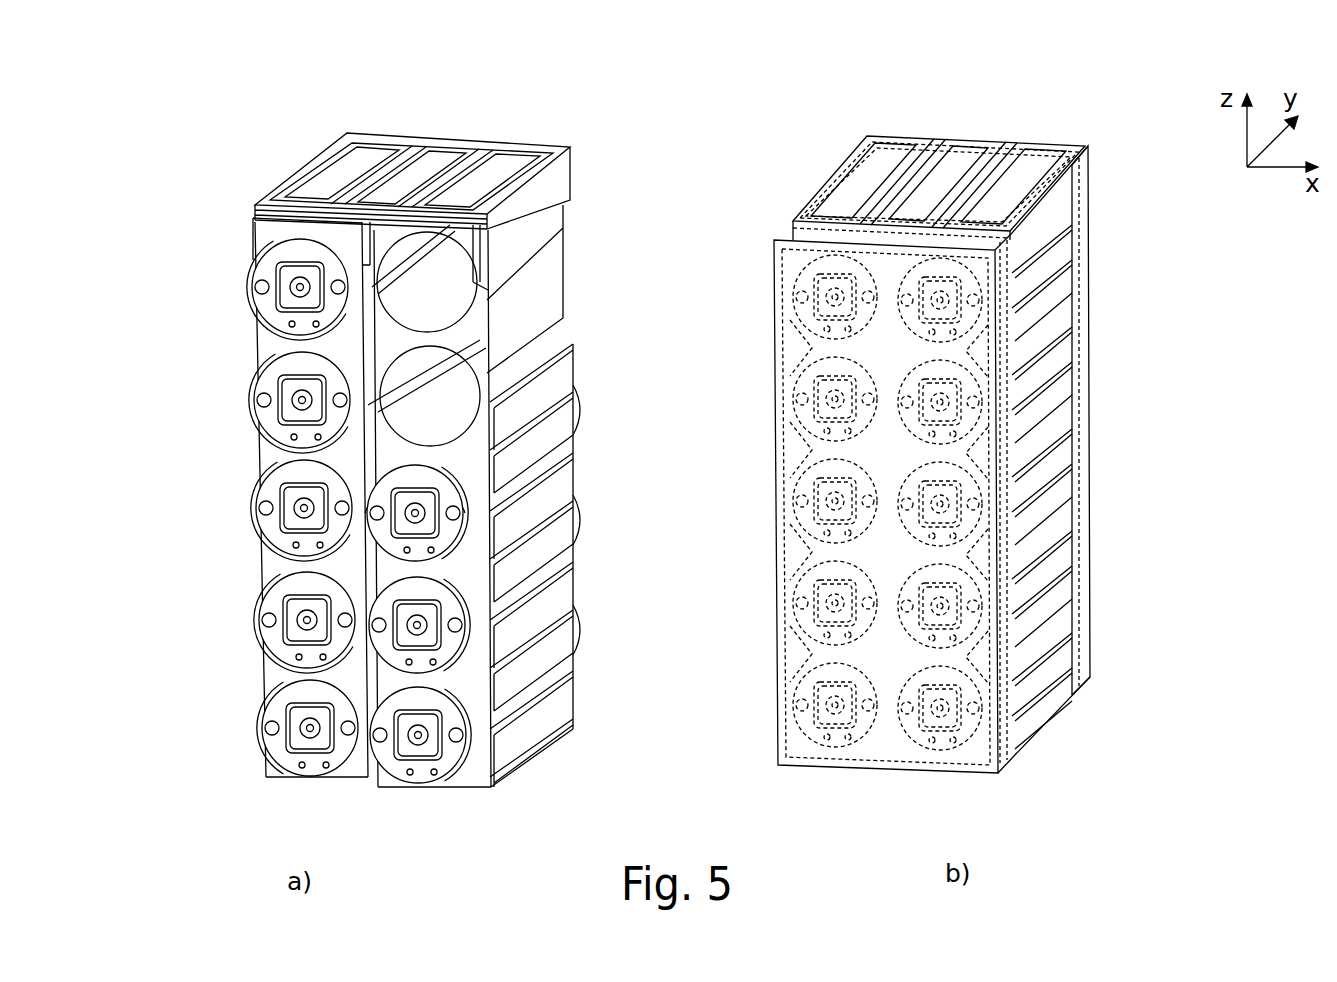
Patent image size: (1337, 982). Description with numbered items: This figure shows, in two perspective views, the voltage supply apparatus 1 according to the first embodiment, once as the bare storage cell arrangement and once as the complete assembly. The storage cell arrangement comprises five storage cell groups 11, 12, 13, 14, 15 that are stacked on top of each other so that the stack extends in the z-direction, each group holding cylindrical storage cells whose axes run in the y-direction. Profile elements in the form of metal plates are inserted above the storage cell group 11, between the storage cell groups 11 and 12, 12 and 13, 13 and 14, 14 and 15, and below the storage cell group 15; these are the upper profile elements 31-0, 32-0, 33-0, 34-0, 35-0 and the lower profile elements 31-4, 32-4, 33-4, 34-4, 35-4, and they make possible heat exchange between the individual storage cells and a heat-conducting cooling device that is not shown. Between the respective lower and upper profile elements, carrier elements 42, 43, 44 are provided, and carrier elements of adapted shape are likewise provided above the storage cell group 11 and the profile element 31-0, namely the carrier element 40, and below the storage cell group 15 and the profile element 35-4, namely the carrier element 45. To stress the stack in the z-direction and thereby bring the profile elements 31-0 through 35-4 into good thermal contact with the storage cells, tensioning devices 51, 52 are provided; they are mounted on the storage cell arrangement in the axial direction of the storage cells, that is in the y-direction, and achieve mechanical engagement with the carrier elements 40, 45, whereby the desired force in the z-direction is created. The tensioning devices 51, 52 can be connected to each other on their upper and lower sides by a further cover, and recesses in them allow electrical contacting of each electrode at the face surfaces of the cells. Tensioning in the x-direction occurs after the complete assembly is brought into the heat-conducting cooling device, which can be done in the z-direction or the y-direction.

The apparatus 1 is at (445, 93).
The storage cell group 11 is at (232, 278).
The storage cell group 12 is at (232, 389).
The storage cell group 13 is at (235, 507).
The storage cell group 14 is at (237, 616).
The storage cell group 15 is at (240, 722).
The upper profile element 31-0 is at (568, 168).
The lower profile element 31-4 is at (565, 243).
The upper profile element 32-0 is at (565, 298).
The lower profile element 32-4 is at (558, 375).
The upper profile element 33-0 is at (558, 427).
The lower profile element 33-4 is at (560, 483).
The upper profile element 34-0 is at (560, 530).
The lower profile element 34-4 is at (562, 585).
The upper profile element 35-0 is at (562, 632).
The lower profile element 35-4 is at (567, 697).
The carrier element 40 is at (262, 232).
The carrier element 42 is at (262, 452).
The carrier element 43 is at (262, 562).
The carrier element 44 is at (262, 667).
The carrier element 45 is at (265, 770).
The tensioning device 51 is at (887, 747).
The tensioning device 52 is at (1077, 637).